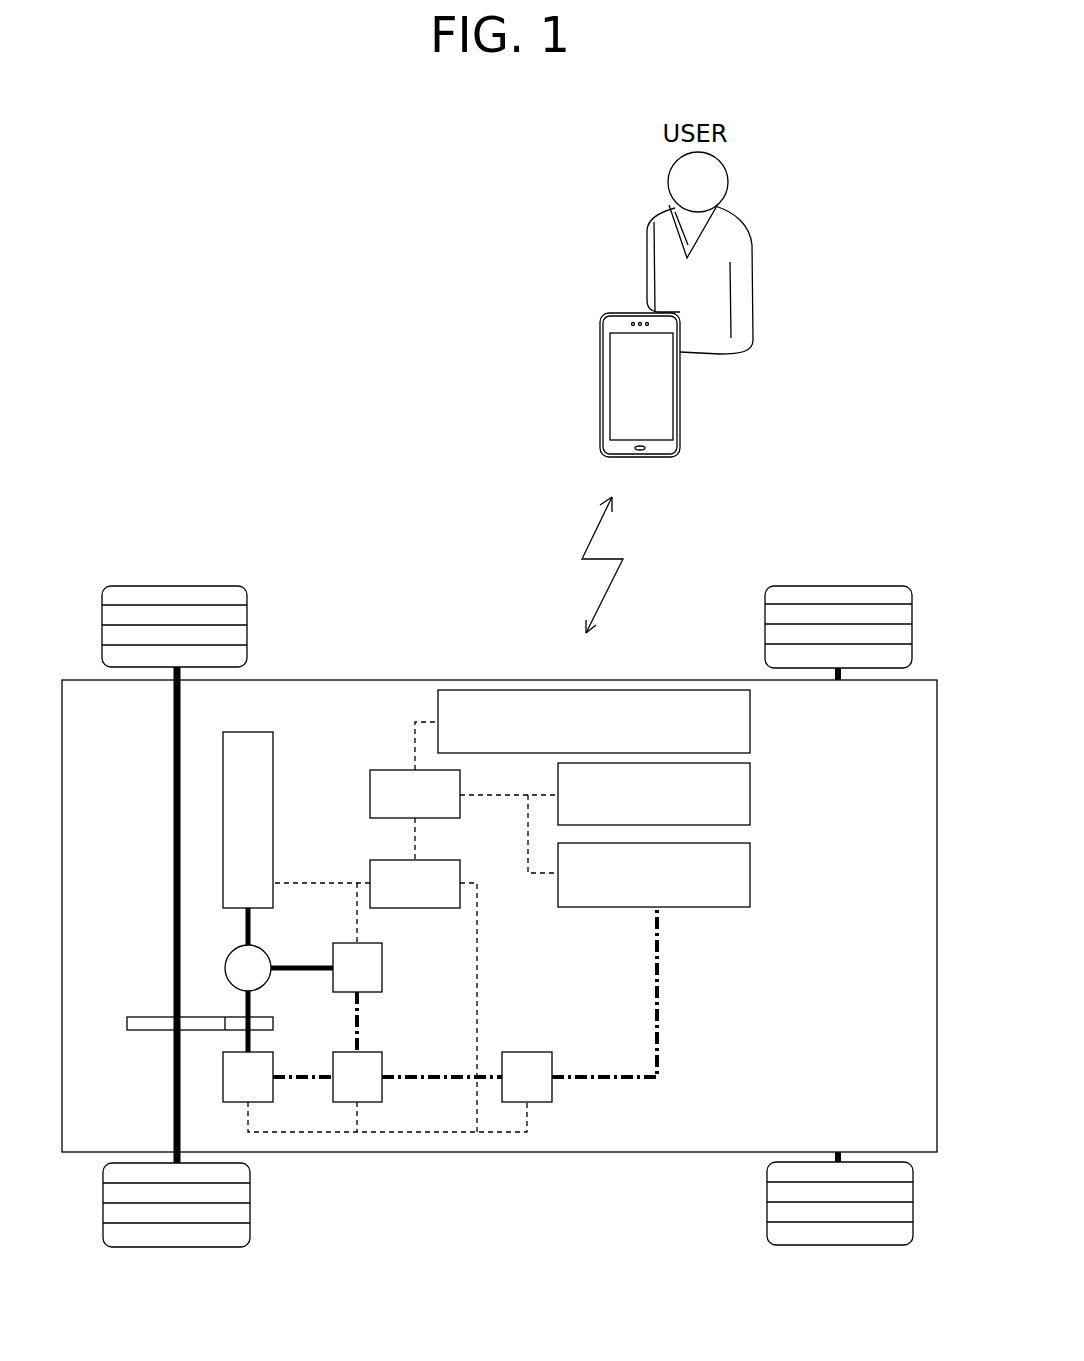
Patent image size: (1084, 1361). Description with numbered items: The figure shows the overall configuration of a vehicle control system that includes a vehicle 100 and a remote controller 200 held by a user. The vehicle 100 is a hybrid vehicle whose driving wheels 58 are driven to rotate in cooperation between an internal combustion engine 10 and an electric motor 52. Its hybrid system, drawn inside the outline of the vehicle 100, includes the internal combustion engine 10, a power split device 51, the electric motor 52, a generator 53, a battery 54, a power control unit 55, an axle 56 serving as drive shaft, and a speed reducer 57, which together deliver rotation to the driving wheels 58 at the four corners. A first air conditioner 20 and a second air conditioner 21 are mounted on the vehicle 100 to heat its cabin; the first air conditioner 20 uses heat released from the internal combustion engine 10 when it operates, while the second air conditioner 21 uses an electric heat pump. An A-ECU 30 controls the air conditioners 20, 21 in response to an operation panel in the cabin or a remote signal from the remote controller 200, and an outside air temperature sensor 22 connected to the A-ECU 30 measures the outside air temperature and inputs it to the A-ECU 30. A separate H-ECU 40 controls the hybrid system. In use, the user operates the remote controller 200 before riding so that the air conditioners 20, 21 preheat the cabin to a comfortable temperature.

The internal combustion engine 10 is at (253, 730).
The first air conditioner 20 is at (750, 792).
The second air conditioner 21 is at (750, 870).
The outside air temperature sensor 22 is at (750, 722).
The A-ECU 30 is at (370, 772).
The H-ECU 40 is at (370, 862).
The power split device 51 is at (272, 983).
The electric motor 52 is at (273, 1067).
The generator 53 is at (383, 963).
The battery 54 is at (543, 1052).
The power control unit 55 is at (382, 1092).
The axle 56 is at (172, 1081).
The speed reducer 57 is at (153, 1017).
The driving wheels 58 is at (173, 583).
The vehicle 100 is at (407, 678).
The remote controller 200 is at (600, 377).